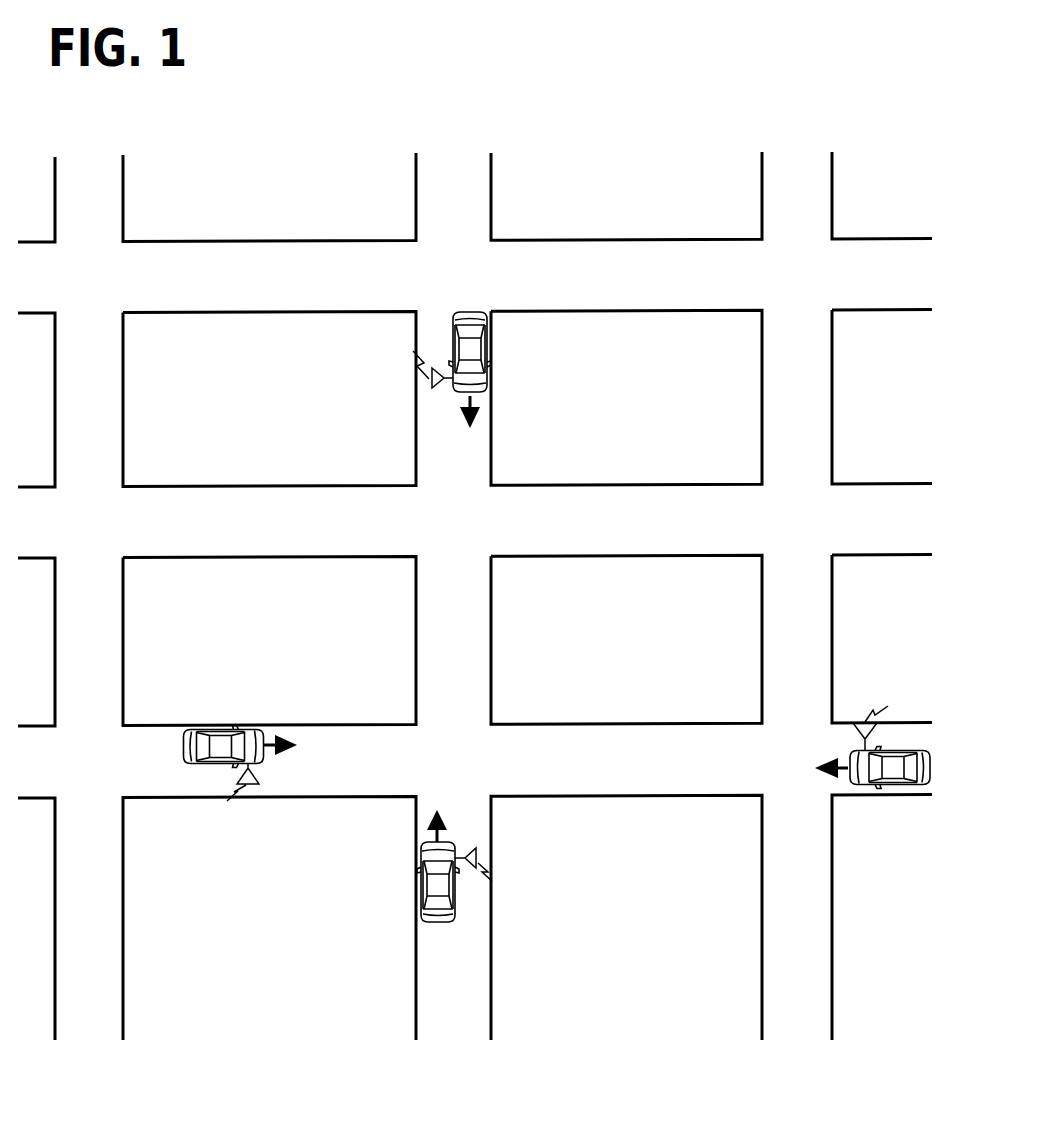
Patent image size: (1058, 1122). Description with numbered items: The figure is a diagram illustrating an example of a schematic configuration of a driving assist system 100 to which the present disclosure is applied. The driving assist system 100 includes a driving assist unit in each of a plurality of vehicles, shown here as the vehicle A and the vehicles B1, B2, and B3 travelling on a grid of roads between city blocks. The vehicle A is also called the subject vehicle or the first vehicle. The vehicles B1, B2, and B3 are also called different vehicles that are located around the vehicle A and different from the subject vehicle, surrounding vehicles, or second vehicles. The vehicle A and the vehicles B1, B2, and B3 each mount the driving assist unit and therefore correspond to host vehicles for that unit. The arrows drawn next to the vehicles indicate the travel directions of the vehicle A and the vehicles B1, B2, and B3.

The driving assist system 100 is at (714, 110).
The vehicle A is at (439, 874).
The vehicle B1 is at (872, 754).
The vehicle B2 is at (219, 733).
The vehicle B3 is at (482, 375).